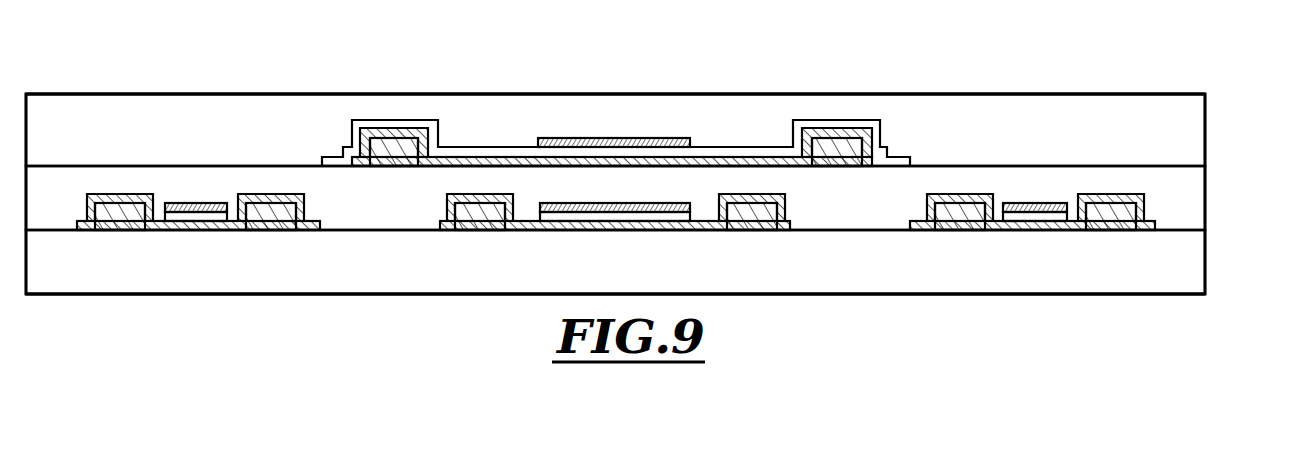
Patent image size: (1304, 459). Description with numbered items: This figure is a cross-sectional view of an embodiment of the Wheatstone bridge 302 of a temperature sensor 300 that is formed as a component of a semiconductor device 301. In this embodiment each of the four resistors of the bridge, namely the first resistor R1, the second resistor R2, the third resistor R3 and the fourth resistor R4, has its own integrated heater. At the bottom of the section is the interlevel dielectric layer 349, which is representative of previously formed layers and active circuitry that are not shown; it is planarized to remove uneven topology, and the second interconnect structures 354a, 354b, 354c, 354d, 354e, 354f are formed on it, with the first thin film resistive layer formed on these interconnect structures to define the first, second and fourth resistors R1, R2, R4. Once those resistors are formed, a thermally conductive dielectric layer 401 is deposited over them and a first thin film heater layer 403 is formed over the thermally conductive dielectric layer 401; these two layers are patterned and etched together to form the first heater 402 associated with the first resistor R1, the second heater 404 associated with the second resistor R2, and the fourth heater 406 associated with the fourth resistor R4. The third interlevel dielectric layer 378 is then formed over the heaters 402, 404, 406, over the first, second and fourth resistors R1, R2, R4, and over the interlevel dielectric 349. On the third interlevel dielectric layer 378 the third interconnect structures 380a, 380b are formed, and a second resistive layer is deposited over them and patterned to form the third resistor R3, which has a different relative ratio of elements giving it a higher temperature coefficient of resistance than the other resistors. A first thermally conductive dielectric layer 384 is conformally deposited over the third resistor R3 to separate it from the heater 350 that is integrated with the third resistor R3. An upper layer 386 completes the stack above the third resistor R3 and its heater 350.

The temperature sensor 300 is at (1148, 46).
The semiconductor device 301 is at (1226, 305).
The Wheatstone bridge 302 is at (276, 58).
The interlevel dielectric layer 349 is at (1192, 262).
The first heater 350 is at (631, 138).
The second interconnect structure 354a is at (118, 215).
The second interconnect structure 354b is at (274, 215).
The second interconnect structure 354c is at (482, 215).
The second interconnect structure 354d is at (753, 215).
The second interconnect structure 354e is at (960, 215).
The second interconnect structure 354f is at (1115, 215).
The third interlevel dielectric layer 378 is at (1192, 193).
The third interconnect structure 380a is at (392, 148).
The third interconnect structure 380b is at (850, 148).
The first thermally conductive dielectric layer 384 is at (352, 122).
The upper dielectric layer 386 is at (1192, 125).
The thermally conductive dielectric layer 401 is at (196, 218).
The first heater 402 is at (214, 203).
The first thin film heater layer 403 is at (162, 204).
The second heater 404 is at (631, 203).
The fourth heater 406 is at (1047, 203).
The first resistor R1 is at (168, 198).
The second resistor R2 is at (591, 215).
The third resistor R3 is at (611, 146).
The fourth resistor R4 is at (1008, 215).